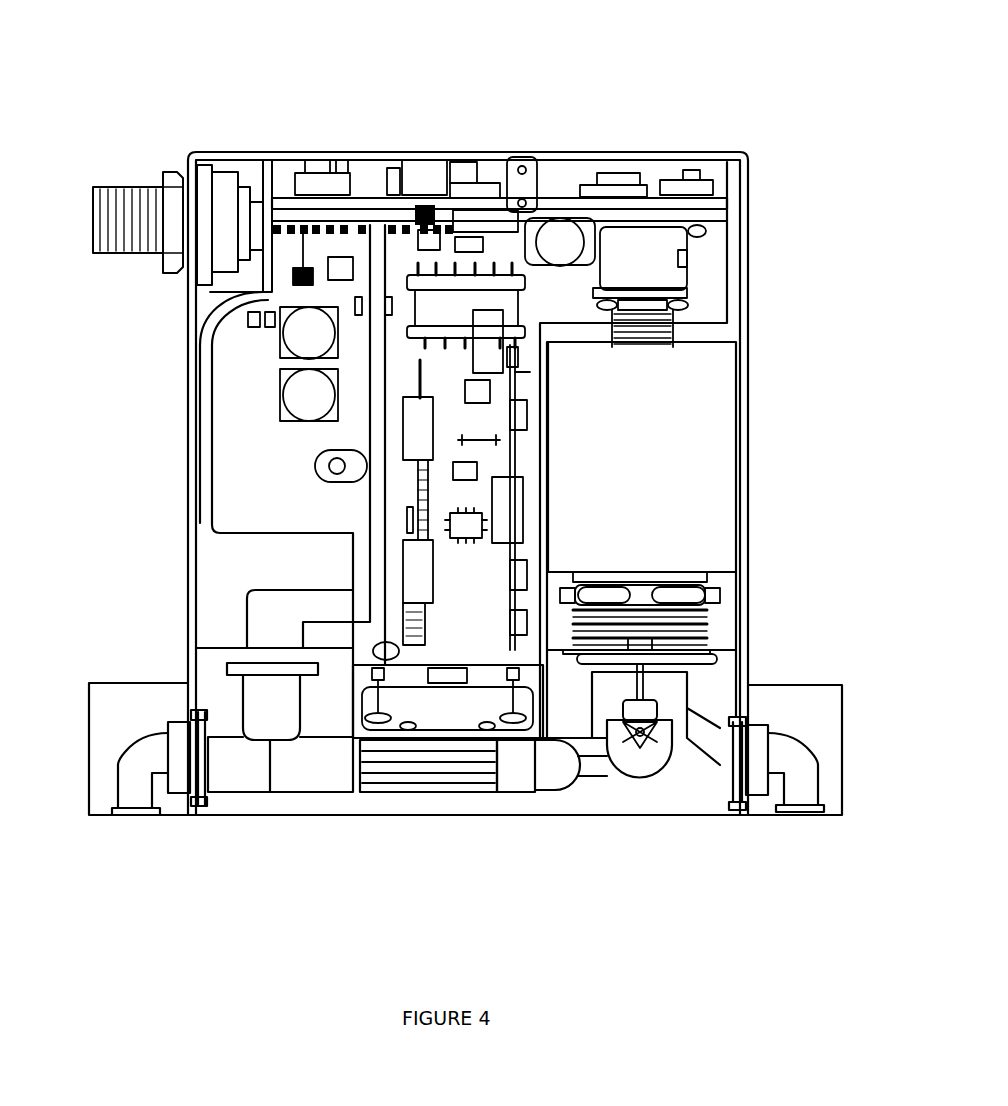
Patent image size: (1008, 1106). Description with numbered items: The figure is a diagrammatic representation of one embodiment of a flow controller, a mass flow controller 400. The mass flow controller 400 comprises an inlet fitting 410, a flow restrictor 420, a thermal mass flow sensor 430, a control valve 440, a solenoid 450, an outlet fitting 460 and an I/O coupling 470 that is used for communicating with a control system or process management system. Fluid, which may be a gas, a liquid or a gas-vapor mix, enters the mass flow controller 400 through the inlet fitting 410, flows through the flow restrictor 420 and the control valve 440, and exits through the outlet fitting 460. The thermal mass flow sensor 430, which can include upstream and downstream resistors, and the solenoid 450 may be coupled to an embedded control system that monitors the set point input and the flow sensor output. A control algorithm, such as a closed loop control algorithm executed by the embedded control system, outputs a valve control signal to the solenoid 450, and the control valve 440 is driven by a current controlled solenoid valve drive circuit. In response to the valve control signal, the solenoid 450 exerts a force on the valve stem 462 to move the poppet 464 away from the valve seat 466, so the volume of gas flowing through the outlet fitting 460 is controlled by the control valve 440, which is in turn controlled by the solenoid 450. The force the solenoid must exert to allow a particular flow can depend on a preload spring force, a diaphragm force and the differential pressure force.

The mass flow controller 400 is at (212, 62).
The inlet fitting 410 is at (132, 835).
The flow restrictor 420 is at (433, 798).
The thermal mass flow sensor 430 is at (456, 752).
The control valve 440 is at (675, 770).
The solenoid 450 is at (668, 485).
The outlet fitting 460 is at (817, 838).
The valve stem 462 is at (658, 680).
The poppet 464 is at (640, 745).
The valve seat 466 is at (618, 757).
The I/O coupling 470 is at (126, 180).